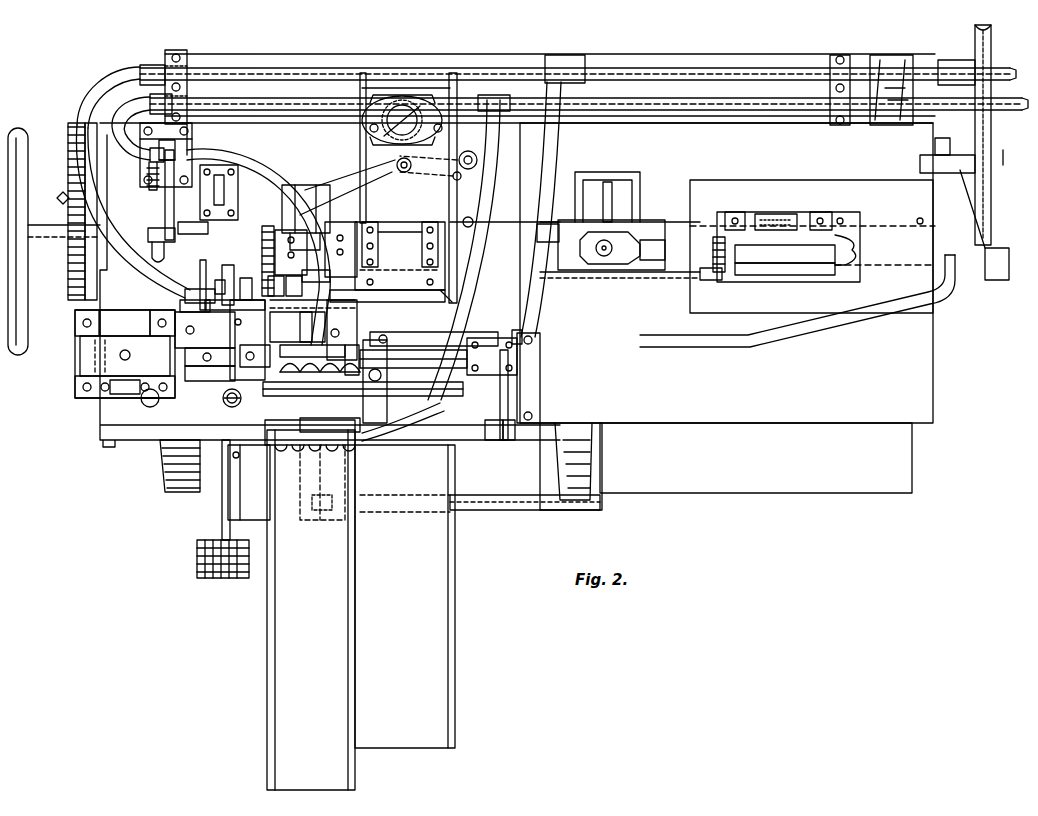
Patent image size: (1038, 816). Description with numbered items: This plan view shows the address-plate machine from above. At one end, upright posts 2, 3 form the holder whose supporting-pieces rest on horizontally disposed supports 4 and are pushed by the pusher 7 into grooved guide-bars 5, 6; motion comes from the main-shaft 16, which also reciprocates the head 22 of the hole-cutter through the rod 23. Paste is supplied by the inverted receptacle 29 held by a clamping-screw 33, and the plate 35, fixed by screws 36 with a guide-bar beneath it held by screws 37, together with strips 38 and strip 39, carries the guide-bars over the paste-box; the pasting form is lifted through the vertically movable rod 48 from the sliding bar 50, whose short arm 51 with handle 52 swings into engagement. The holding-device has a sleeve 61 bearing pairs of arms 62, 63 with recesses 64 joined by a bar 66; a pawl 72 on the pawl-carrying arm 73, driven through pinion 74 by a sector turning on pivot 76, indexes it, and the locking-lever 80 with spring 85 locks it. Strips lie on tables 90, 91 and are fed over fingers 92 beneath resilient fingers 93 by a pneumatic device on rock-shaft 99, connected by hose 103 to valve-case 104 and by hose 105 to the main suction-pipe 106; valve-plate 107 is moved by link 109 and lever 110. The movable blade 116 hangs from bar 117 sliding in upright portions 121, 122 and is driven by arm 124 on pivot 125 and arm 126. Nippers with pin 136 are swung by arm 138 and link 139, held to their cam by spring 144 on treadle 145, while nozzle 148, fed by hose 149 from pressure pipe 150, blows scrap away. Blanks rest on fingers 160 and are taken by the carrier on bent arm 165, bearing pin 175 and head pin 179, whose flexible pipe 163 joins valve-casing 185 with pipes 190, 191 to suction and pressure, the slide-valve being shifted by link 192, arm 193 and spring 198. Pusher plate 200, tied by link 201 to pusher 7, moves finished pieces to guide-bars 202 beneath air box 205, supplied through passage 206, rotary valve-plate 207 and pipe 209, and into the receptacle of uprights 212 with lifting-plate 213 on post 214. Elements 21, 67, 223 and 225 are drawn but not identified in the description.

The upright post 2 is at (778, 216).
The upright post 3 is at (712, 254).
The horizontally disposed support 4 is at (790, 236).
The guide-bar 5 is at (693, 222).
The guide-bar 6 is at (705, 280).
The pusher 7 is at (852, 250).
The main-shaft 16 is at (50, 262).
The bracket 21 is at (660, 262).
The head 22 is at (624, 266).
The rod 23 is at (612, 200).
The receptacle 29 is at (365, 105).
The clamping-screw 33 is at (408, 115).
The plate 35 is at (387, 299).
The screws 36 is at (449, 299).
The screws 37 is at (385, 272).
The strips 38 is at (380, 245).
The strip 39 is at (400, 222).
The vertically movable rod 48 is at (350, 182).
The vertically sliding bar 50 is at (478, 158).
The short arm 51 is at (470, 176).
The handle 52 is at (475, 220).
The sleeve 61 is at (342, 300).
The radially extended arm 62 is at (266, 330).
The radially extended arm 63 is at (275, 250).
The elongated recess 64 is at (400, 280).
The bar 66 is at (395, 165).
The rack 67 is at (262, 265).
The pawl 72 is at (278, 285).
The pawl-carrying arm 73 is at (250, 273).
The pinion 74 is at (222, 280).
The pivot 76 is at (297, 285).
The locking-lever 80 is at (283, 196).
The spring 85 is at (275, 228).
The table 90 is at (440, 600).
The table 91 is at (300, 630).
The fingers 92 is at (358, 446).
The fingers 93 is at (321, 482).
The rock-shaft 99 is at (172, 462).
The flexible hose 103 is at (405, 432).
The valve-case 104 is at (540, 392).
The flexible hose 105 is at (527, 310).
The main suction-pipe 106 is at (648, 70).
The valve-plate 107 is at (500, 398).
The link 109 is at (521, 438).
The lever 110 is at (486, 438).
The cutting-blade 116 is at (305, 368).
The horizontally arranged bar 117 is at (345, 370).
The upright portion 121 is at (352, 395).
The upright portion 122 is at (206, 402).
The arm 124 is at (302, 505).
The pivot 125 is at (495, 512).
The arm 126 is at (580, 470).
The laterally extended pin 136 is at (172, 160).
The arm 138 is at (249, 482).
The link 139 is at (249, 472).
The spring 144 is at (222, 470).
The treadle 145 is at (195, 548).
The nozzle 148 is at (383, 376).
The flexible hose 149 is at (478, 288).
The pipe 150 is at (732, 104).
The fingers 160 is at (312, 365).
The flexible pipe 163 is at (247, 160).
The bent arm 165 is at (346, 196).
The laterally extended pin 175 is at (370, 355).
The laterally extended pin 179 is at (322, 339).
The valve-casing 185 is at (190, 150).
The pipe 190 is at (95, 112).
The pipe 191 is at (105, 95).
The link 192 is at (172, 214).
The arm 193 is at (162, 250).
The spring 198 is at (147, 185).
The plate 200 is at (443, 352).
The link 201 is at (718, 347).
The grooved guide-bars 202 is at (225, 340).
The box-like structure 205 is at (210, 354).
The passage 206 is at (185, 296).
The rotary valve-plate 207 is at (207, 282).
The flexible pipe 209 is at (80, 150).
The uprights 212 is at (75, 375).
The lifting-plate 213 is at (125, 356).
The post 214 is at (125, 323).
The plate 223 is at (128, 398).
The rack 225 is at (68, 203).